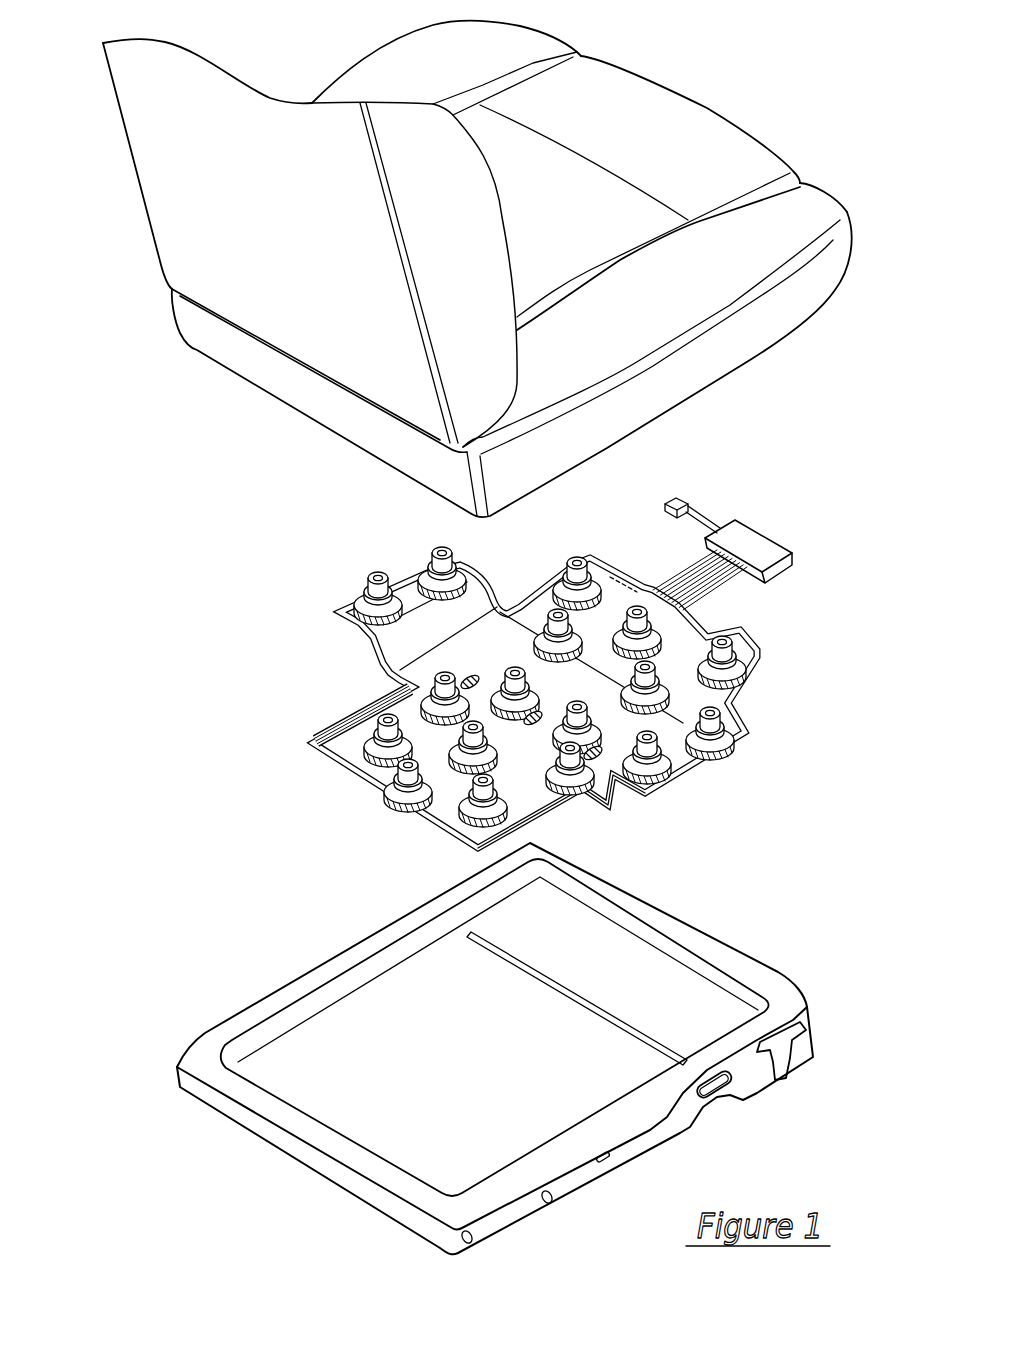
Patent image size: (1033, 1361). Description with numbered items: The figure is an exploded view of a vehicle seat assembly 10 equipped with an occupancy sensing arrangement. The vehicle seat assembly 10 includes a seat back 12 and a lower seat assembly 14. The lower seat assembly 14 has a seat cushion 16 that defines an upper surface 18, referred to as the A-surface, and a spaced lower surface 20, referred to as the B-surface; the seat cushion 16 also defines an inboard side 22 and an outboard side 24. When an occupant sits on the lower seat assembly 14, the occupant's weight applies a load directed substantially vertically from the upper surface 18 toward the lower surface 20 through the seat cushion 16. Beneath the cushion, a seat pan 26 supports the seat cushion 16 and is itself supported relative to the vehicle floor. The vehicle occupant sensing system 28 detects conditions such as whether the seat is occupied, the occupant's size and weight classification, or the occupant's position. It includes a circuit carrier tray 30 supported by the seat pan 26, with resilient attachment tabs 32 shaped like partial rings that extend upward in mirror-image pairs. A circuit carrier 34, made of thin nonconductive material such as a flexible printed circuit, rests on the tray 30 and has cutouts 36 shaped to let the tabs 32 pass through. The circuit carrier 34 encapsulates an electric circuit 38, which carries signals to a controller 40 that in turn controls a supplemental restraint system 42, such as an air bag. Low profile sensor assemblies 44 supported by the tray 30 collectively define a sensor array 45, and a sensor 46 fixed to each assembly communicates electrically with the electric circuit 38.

The vehicle seat assembly 10 is at (216, 508).
The seat back 12 is at (195, 216).
The lower seat assembly 14 is at (721, 97).
The seat cushion 16 is at (777, 212).
The upper surface 18 is at (562, 209).
The lower surface 20 is at (783, 337).
The inboard side 22 is at (775, 307).
The outboard side 24 is at (387, 50).
The seat pan 26 is at (390, 1115).
The vehicle occupant sensing system 28 is at (408, 711).
The circuit carrier tray 30 is at (313, 740).
The resilient attachment tabs 32 is at (410, 790).
The circuit carrier 34 is at (553, 790).
The cutouts 36 is at (500, 807).
The electric circuit 38 is at (693, 623).
The controller 40 is at (755, 547).
The supplemental restraint system 42 is at (673, 497).
The sensor assemblies 44 is at (745, 630).
The sensor array 45 is at (305, 638).
The sensor 46 is at (738, 643).